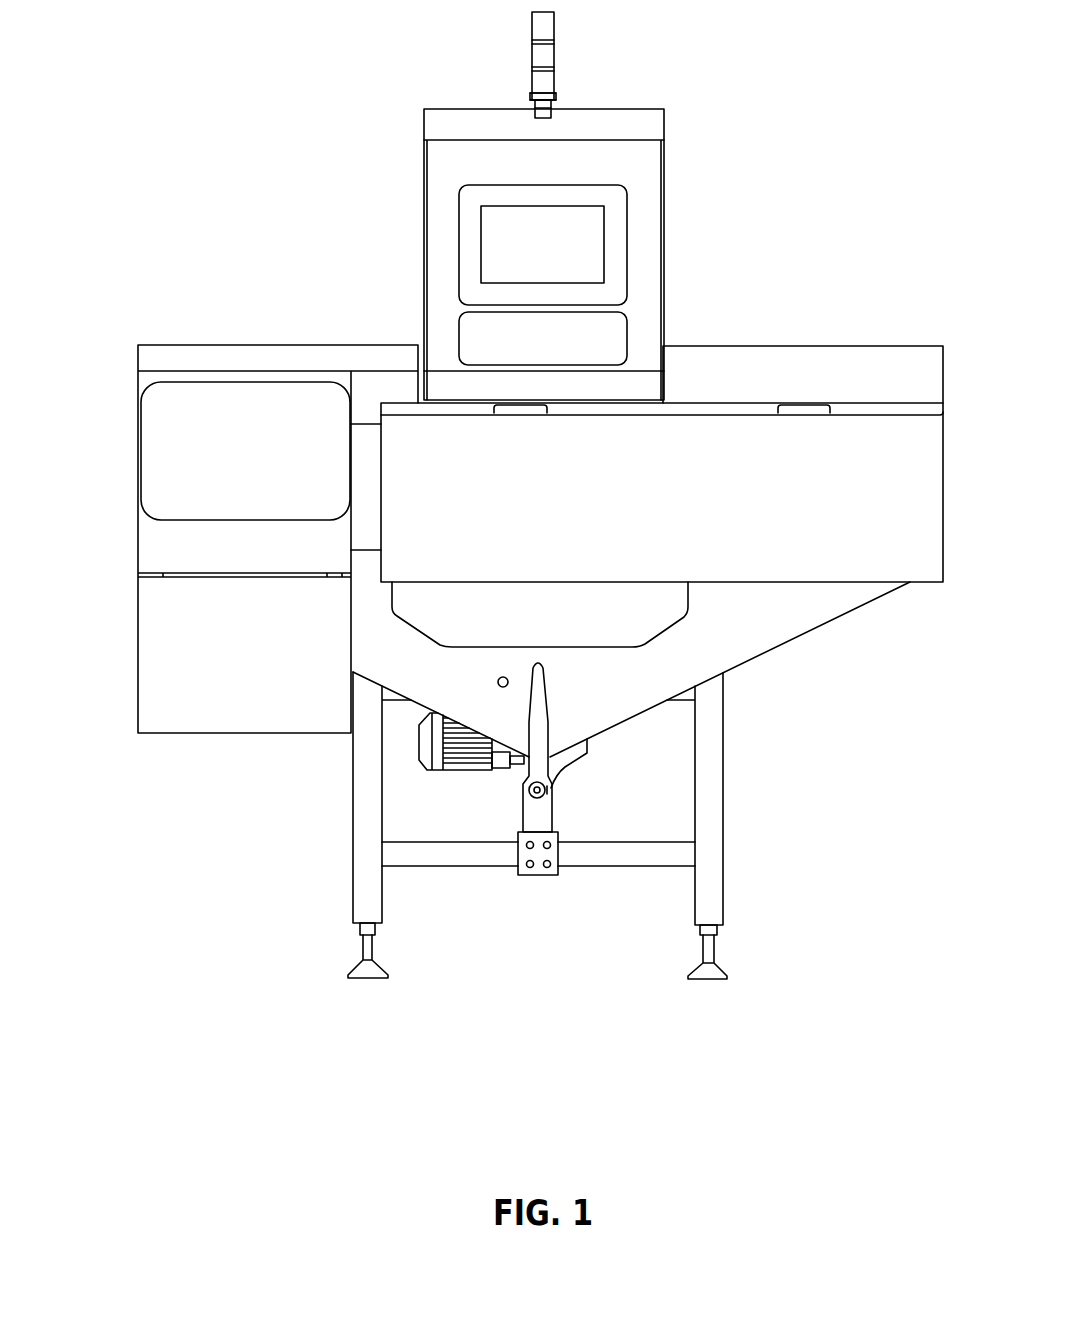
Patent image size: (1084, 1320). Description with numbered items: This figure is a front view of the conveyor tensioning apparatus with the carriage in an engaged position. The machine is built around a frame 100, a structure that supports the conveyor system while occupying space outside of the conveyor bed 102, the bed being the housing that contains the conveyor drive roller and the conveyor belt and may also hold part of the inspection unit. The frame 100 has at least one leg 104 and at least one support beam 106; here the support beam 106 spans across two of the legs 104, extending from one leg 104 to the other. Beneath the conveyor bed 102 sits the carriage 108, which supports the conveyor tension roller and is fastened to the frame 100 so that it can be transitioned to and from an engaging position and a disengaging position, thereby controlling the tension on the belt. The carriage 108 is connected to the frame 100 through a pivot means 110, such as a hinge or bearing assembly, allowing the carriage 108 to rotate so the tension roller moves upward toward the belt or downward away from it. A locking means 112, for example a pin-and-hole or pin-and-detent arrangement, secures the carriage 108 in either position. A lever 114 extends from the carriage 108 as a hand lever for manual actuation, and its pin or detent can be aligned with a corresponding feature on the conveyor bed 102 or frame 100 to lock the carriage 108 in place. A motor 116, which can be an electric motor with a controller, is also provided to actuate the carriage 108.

The frame 100 is at (281, 819).
The conveyor bed 102 is at (722, 638).
The leg 104 is at (368, 903).
The support beam 106 is at (600, 850).
The carriage 108 is at (575, 760).
The pivot means 110 is at (545, 789).
The locking means 112 is at (498, 681).
The lever 114 is at (537, 737).
The motor 116 is at (546, 794).